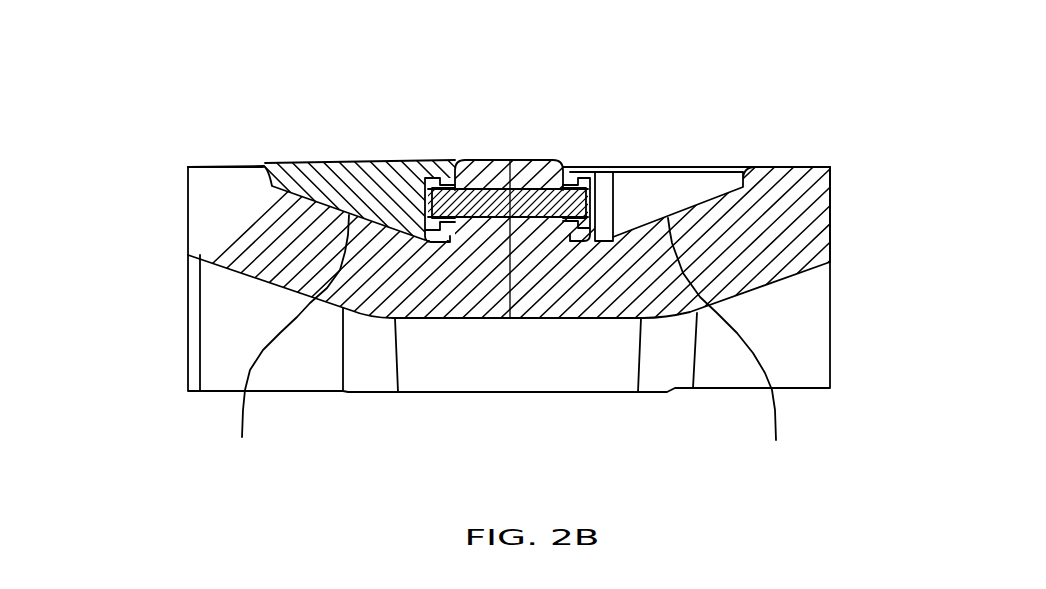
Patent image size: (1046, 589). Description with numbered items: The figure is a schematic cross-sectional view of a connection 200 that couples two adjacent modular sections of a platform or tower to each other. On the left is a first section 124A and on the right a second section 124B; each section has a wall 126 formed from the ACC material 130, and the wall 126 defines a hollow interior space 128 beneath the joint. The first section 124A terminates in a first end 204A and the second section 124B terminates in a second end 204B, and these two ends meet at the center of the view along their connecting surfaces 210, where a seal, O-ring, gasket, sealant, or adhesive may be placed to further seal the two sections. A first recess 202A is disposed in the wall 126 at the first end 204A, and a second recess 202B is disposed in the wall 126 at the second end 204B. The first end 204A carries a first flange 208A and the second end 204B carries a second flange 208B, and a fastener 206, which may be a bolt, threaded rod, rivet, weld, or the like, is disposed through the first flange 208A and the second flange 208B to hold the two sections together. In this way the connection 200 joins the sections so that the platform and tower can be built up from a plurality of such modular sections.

The connection 200 is at (560, 93).
The first section 124A is at (223, 227).
The second section 124B is at (792, 227).
The wall 126 is at (205, 192).
The ACC material 130 is at (810, 193).
The first end 204A is at (320, 157).
The second end 204B is at (697, 157).
The fastener 206 is at (287, 175).
The first flange 208A is at (426, 180).
The second flange 208B is at (600, 186).
The hollow interior space 128 is at (445, 368).
The connecting surfaces 210 is at (510, 265).
The first recess 202A is at (286, 342).
The second recess 202B is at (737, 345).